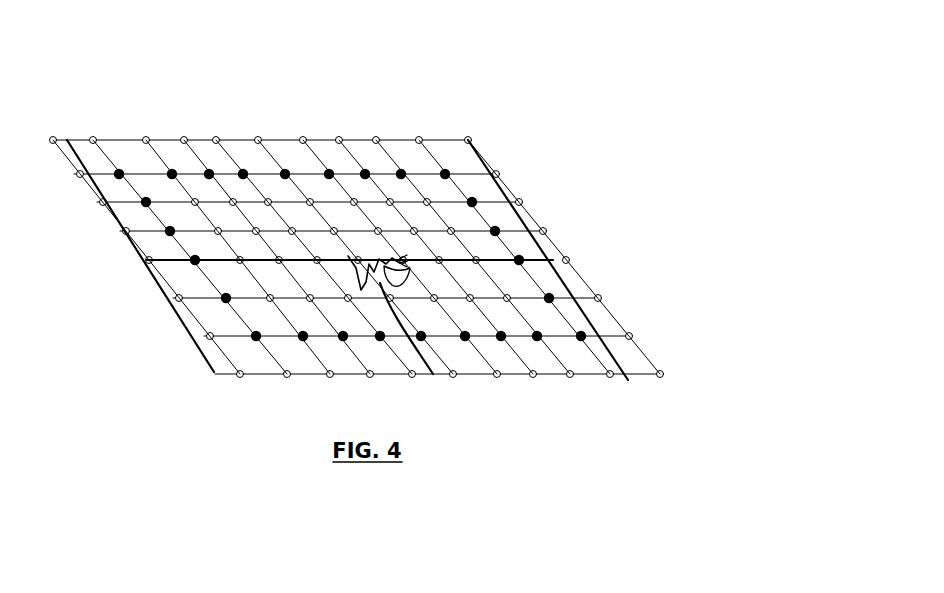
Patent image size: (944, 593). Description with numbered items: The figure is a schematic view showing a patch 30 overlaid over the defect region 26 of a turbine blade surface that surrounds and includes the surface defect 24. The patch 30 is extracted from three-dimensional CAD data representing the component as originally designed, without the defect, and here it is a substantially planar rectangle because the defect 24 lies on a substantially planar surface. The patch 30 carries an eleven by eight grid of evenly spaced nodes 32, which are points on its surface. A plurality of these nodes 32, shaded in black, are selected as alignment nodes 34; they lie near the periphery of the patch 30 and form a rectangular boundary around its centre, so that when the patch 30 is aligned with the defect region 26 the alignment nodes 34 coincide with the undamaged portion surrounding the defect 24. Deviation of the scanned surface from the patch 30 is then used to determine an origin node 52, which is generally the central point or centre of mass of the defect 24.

The surface defect 24 is at (349, 257).
The defect region 26 is at (147, 321).
The patch 30 is at (627, 305).
The nodes 32 is at (580, 336).
The alignment nodes 34 is at (229, 298).
The origin node 52 is at (365, 262).